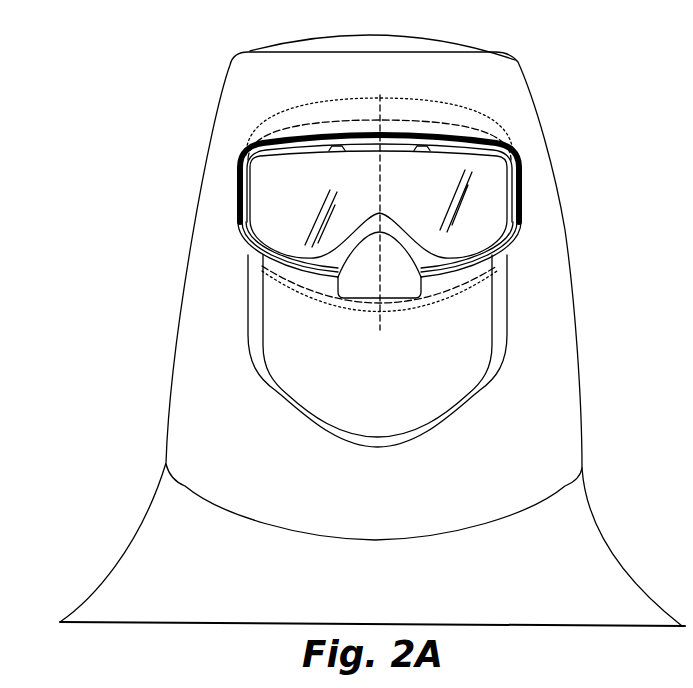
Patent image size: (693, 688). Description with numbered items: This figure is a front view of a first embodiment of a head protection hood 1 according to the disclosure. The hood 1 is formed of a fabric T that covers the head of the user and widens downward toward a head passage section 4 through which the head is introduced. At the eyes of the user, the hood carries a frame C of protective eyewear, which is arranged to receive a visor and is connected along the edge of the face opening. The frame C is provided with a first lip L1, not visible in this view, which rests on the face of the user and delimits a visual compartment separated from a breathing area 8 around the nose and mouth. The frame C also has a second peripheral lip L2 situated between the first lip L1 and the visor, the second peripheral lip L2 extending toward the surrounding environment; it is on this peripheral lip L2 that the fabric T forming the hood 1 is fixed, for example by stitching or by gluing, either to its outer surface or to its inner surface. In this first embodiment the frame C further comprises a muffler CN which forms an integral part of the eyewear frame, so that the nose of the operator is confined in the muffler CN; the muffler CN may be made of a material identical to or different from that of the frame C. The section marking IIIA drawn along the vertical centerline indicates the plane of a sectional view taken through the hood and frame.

The head protection hood 1 is at (192, 142).
The fabric T is at (545, 455).
The head passage section 4 is at (557, 628).
The second peripheral lip L2 is at (460, 117).
The first lip L1 is at (467, 277).
The frame C is at (515, 150).
The breathing area 8 is at (378, 260).
The muffler CN is at (379, 286).
The section line IIIA is at (376, 213).